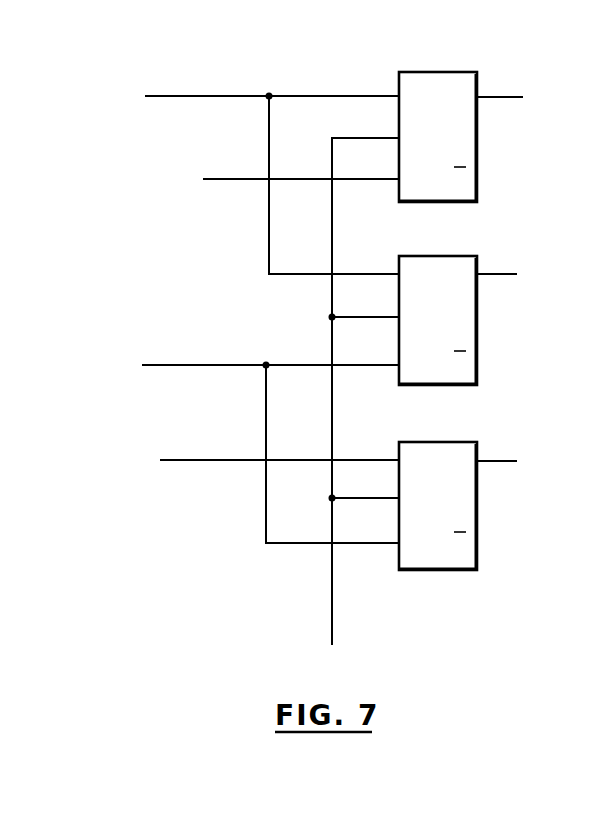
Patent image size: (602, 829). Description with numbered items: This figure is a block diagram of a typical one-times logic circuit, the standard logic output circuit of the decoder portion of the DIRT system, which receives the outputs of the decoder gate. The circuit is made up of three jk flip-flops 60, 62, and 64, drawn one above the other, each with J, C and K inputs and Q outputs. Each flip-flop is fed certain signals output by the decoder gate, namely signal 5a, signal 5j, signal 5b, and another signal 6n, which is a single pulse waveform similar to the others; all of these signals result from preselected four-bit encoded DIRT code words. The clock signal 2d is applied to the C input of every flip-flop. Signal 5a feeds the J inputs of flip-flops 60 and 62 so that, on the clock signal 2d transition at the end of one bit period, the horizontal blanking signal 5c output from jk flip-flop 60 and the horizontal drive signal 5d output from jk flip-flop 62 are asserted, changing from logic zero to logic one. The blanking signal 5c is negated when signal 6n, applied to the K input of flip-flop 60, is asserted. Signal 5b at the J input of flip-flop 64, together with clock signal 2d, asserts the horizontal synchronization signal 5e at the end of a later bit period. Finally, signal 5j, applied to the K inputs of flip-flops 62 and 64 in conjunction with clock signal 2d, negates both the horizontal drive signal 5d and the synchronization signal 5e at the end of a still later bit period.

The jk flip-flop 60 is at (430, 72).
The jk flip-flop 62 is at (432, 256).
The jk flip-flop unit 64 is at (428, 442).
The signal 5a is at (272, 173).
The signal 5b is at (279, 449).
The horizontal blanking signal 5c is at (500, 85).
The horizontal drive signal 5d is at (506, 266).
The horizontal synchronization signal 5e is at (497, 450).
The signal 5j is at (270, 443).
The signal 6n is at (301, 169).
The clock signal 2d is at (349, 391).